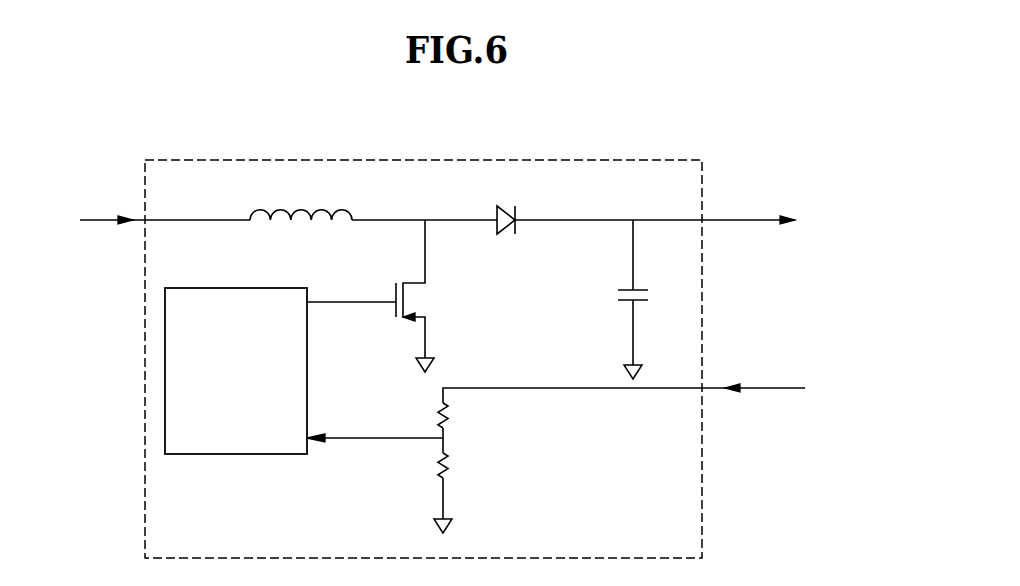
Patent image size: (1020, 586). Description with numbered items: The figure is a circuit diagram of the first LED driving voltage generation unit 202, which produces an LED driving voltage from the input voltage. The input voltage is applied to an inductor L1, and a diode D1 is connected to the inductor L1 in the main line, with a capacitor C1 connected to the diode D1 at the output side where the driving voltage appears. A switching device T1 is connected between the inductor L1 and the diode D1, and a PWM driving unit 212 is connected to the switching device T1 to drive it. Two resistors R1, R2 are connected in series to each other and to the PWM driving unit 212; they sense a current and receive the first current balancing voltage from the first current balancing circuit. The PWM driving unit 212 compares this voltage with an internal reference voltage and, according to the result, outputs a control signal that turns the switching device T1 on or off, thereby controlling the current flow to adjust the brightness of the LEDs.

The first LED driving voltage generation unit 202 is at (452, 160).
The PWM driving unit 212 is at (165, 433).
The inductor L1 is at (301, 204).
The diode D1 is at (512, 210).
The switching device T1 is at (380, 296).
The capacitor C1 is at (645, 299).
The resistor R1 is at (458, 415).
The resistor R2 is at (458, 465).